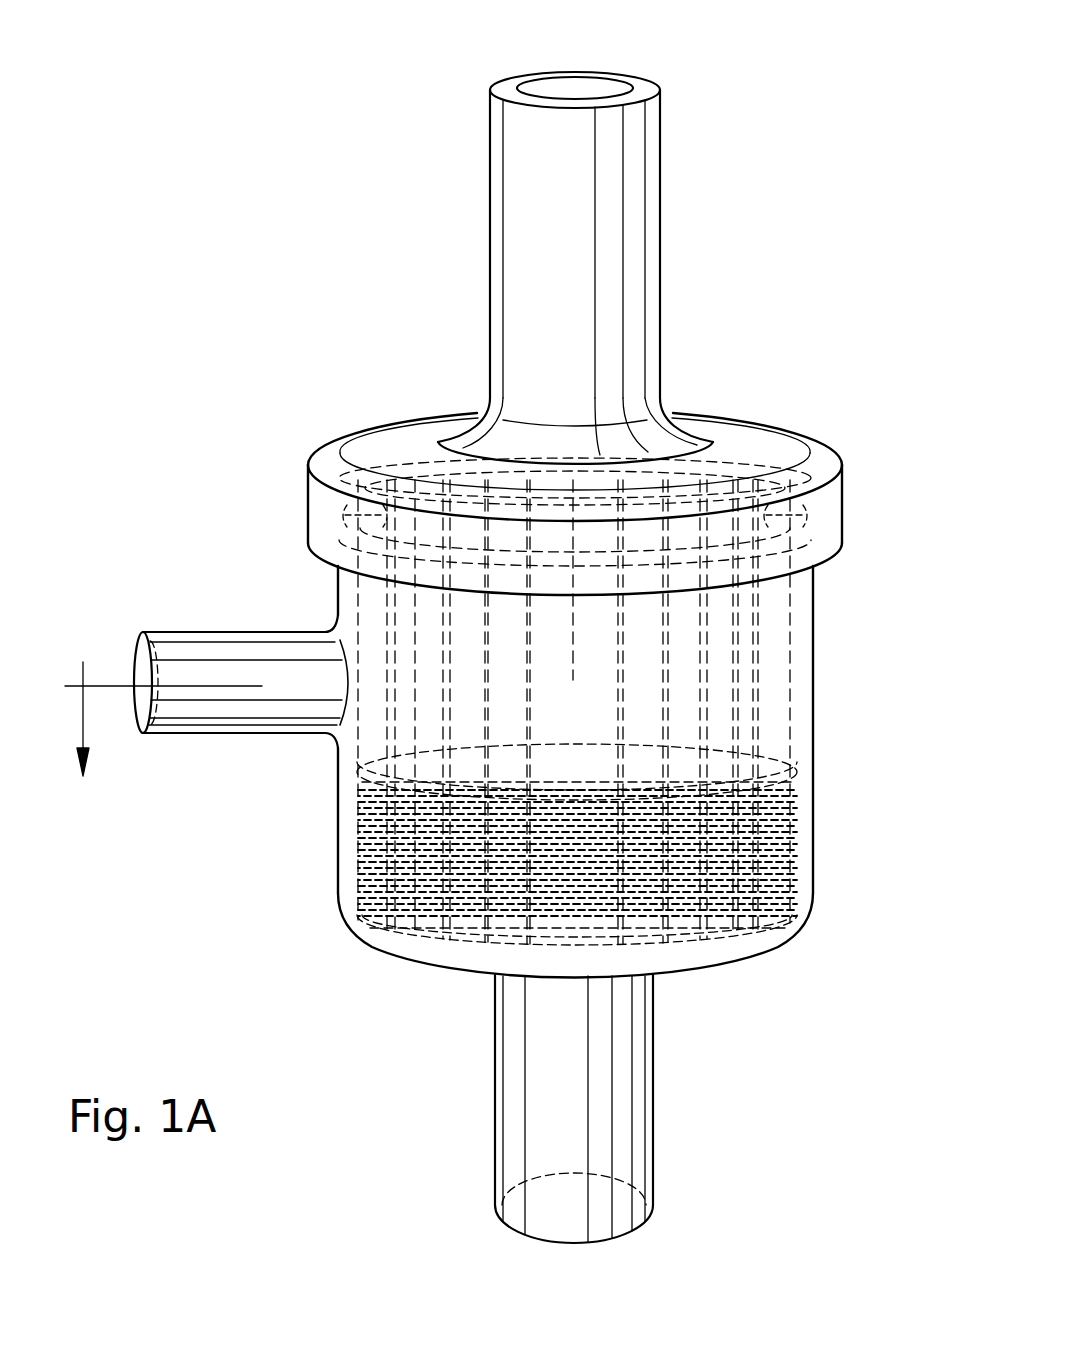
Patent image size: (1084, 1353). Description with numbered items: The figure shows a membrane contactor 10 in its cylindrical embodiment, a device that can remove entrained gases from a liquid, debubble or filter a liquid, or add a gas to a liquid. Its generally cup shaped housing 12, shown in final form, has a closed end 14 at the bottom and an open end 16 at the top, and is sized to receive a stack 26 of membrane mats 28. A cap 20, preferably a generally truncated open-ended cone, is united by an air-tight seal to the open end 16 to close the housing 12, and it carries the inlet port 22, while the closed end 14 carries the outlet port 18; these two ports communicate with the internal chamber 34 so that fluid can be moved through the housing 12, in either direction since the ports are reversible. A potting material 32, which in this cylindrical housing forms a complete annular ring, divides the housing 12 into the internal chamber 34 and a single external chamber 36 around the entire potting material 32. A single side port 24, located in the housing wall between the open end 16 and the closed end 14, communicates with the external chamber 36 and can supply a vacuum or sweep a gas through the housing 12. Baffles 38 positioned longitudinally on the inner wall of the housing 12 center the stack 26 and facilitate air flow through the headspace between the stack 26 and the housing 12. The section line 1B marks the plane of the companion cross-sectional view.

The membrane contactor 10 is at (198, 236).
The housing 12 is at (813, 708).
The closed end 14 is at (697, 980).
The open end 16 is at (383, 492).
The outlet port 18 is at (548, 1243).
The cap 20 is at (841, 507).
The inlet port 22 is at (574, 88).
The side port 24 is at (133, 706).
The stack 26 is at (352, 816).
The membrane mats 28 is at (445, 908).
The potting material 32 is at (777, 480).
The internal chamber 34 is at (505, 472).
The external chamber 36 is at (345, 497).
The baffles 38 is at (720, 657).
The section line 1B is at (163, 703).